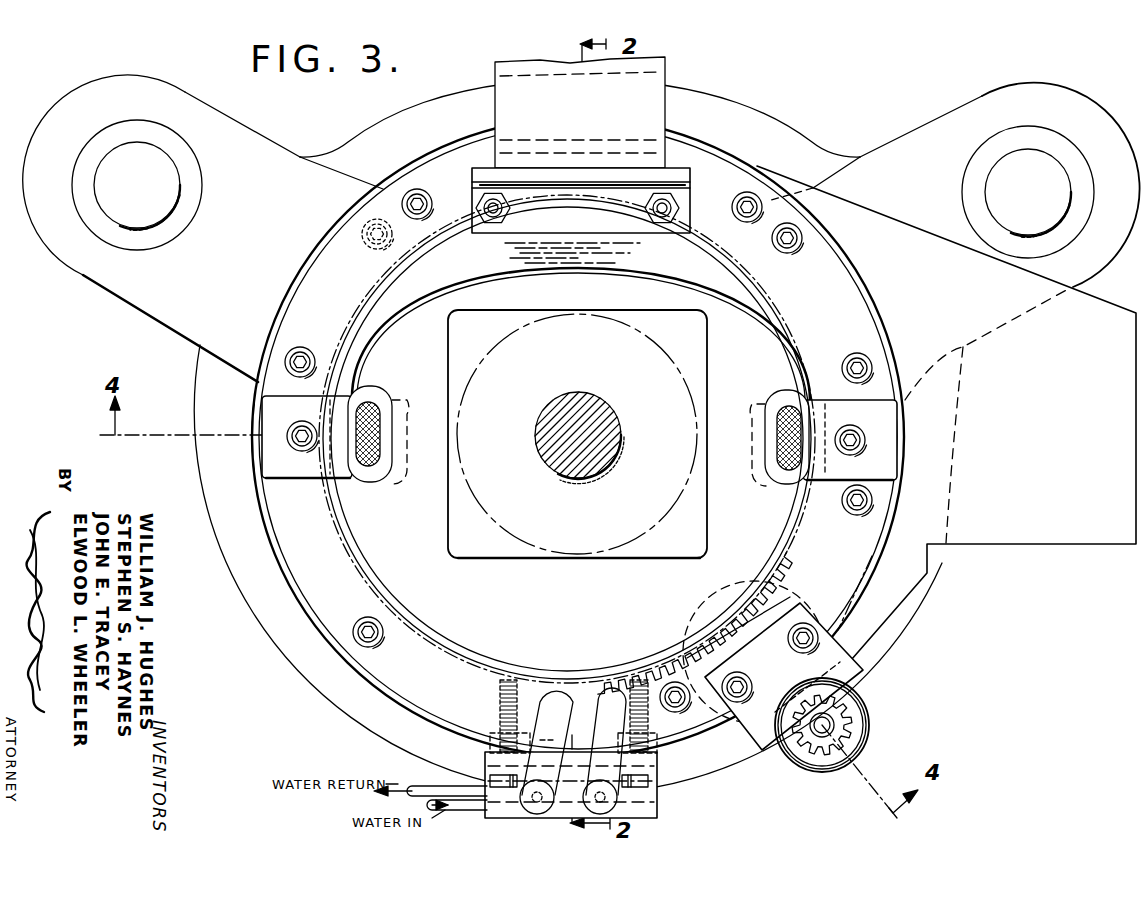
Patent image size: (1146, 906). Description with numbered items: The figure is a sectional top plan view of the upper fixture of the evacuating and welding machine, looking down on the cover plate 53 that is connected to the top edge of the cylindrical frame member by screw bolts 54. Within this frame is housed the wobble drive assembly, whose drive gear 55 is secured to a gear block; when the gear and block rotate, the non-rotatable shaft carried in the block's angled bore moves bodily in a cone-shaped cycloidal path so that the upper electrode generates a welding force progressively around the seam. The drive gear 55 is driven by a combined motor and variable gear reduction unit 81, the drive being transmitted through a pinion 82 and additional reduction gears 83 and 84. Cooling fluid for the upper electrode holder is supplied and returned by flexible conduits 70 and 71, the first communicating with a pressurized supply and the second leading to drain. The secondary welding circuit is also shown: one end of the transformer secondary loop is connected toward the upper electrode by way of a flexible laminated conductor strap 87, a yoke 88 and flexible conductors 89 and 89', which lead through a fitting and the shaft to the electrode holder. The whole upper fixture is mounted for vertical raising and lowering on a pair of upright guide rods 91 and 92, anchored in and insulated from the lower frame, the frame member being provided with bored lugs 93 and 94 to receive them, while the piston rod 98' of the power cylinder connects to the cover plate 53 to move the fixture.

The cover plate 53 is at (318, 583).
The screw bolts 54 is at (374, 626).
The drive gear 55 is at (800, 546).
The flexible conduit 70 is at (545, 768).
The flexible conduit 71 is at (604, 768).
The combined motor and variable gear reduction unit 81 is at (864, 719).
The pinion 82 is at (818, 748).
The reduction gear 83 is at (746, 588).
The reduction gear 84 is at (776, 590).
The flexible laminated conductor strap 87 is at (650, 106).
The yoke 88 is at (757, 308).
The flexible conductor 89 is at (378, 453).
The flexible conductor 89' is at (763, 443).
The upright guide rod 91 is at (158, 164).
The upright guide rod 92 is at (1026, 190).
The bored lug 93 is at (86, 258).
The bored lug 94 is at (1112, 236).
The piston rod 98' is at (579, 419).